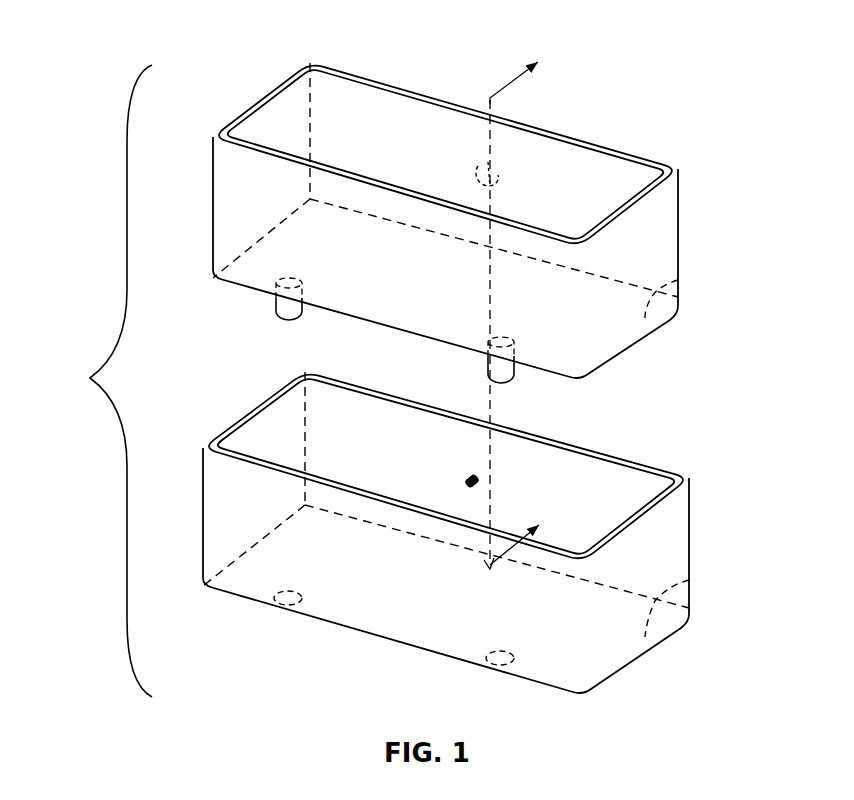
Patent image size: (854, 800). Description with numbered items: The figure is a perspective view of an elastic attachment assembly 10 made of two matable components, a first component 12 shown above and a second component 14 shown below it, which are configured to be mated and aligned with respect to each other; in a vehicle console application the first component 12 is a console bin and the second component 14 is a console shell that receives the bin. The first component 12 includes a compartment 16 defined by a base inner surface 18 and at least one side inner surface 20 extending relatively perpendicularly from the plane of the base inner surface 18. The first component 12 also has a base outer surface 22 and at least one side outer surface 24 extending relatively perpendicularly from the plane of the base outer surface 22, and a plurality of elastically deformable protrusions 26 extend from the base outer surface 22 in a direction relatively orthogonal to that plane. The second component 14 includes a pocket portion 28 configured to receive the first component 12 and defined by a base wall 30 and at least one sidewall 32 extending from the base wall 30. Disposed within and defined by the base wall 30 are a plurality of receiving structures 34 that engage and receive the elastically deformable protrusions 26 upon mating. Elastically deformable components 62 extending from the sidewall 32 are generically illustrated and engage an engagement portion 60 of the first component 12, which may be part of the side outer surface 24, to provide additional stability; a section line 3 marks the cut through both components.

The elastic attachment assembly 10 is at (105, 381).
The first component 12 is at (576, 97).
The second component 14 is at (624, 420).
The compartment 16 is at (358, 103).
The base inner surface 18 is at (679, 280).
The side inner surface 20 is at (542, 201).
The base outer surface 22 is at (379, 327).
The side outer surface 24 is at (679, 168).
The elastically deformable protrusions 26 is at (276, 303).
The pocket portion 28 is at (284, 423).
The base wall 30 is at (690, 582).
The sidewall 32 is at (644, 493).
The receiving structures 34 is at (278, 608).
The engagement portion 60 is at (478, 166).
The elastically deformable components 62 is at (467, 476).
The section line 3- 3 is at (520, 302).